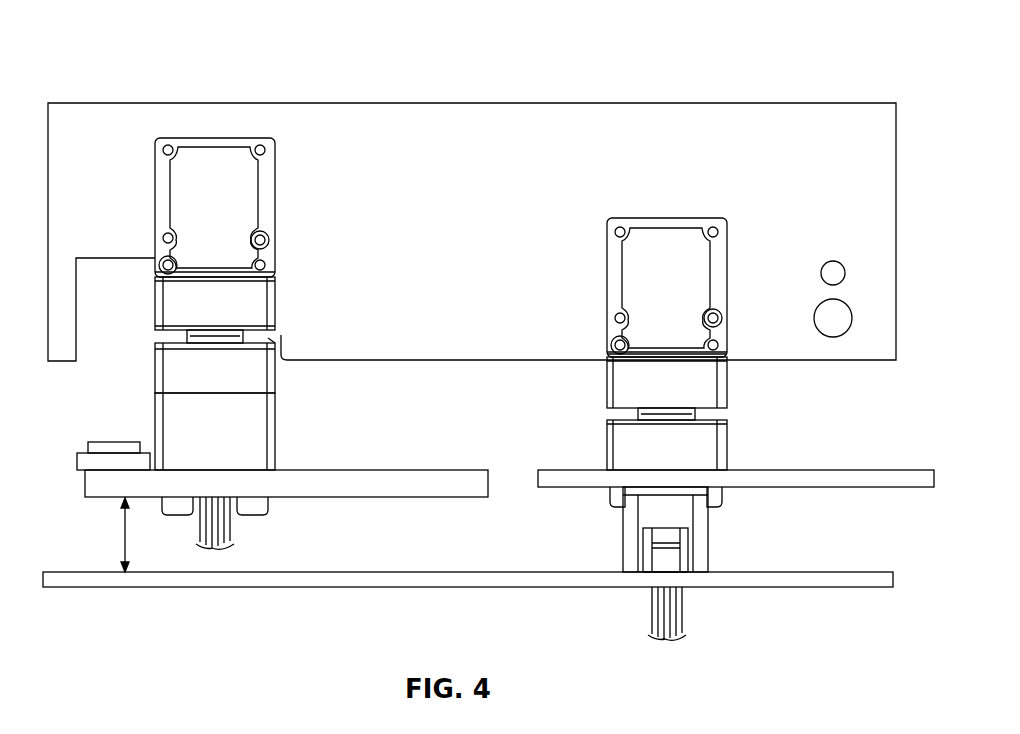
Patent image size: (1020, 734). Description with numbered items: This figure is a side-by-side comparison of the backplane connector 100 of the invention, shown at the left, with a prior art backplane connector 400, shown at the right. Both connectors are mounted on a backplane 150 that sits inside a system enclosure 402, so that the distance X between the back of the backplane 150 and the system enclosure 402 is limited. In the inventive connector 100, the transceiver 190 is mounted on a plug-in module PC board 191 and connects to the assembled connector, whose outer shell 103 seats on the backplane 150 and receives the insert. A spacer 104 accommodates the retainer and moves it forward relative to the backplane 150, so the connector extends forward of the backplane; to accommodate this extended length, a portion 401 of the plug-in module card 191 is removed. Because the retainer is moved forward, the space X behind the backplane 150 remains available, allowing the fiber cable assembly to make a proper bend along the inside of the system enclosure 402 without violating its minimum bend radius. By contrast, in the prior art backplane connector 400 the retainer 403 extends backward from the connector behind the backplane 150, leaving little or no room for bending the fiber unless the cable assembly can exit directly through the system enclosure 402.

The plug-in module PC board 191 is at (83, 118).
The transceiver 190 is at (216, 165).
The backplane connector kit 100 is at (226, 373).
The outer shell 103 is at (155, 378).
The spacer 104 is at (276, 452).
The portion of the plug-in module card 401 is at (270, 341).
The backplane 150 is at (96, 490).
The distance X is at (122, 535).
The system enclosure 402 is at (80, 589).
The prior art backplane connector 400 is at (736, 429).
The retainer 403 is at (710, 555).